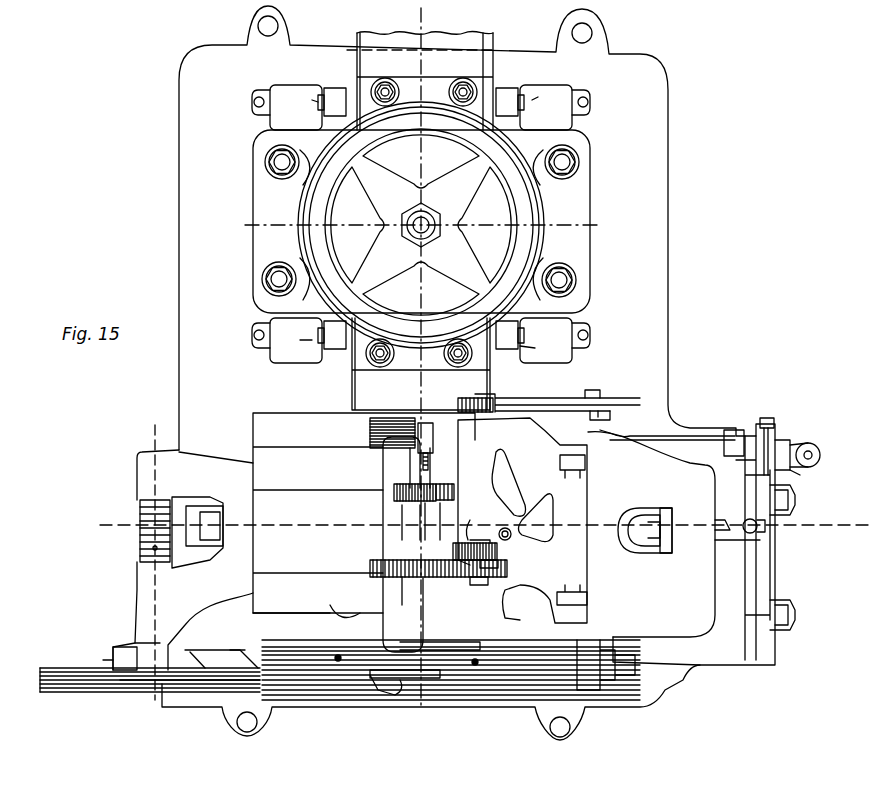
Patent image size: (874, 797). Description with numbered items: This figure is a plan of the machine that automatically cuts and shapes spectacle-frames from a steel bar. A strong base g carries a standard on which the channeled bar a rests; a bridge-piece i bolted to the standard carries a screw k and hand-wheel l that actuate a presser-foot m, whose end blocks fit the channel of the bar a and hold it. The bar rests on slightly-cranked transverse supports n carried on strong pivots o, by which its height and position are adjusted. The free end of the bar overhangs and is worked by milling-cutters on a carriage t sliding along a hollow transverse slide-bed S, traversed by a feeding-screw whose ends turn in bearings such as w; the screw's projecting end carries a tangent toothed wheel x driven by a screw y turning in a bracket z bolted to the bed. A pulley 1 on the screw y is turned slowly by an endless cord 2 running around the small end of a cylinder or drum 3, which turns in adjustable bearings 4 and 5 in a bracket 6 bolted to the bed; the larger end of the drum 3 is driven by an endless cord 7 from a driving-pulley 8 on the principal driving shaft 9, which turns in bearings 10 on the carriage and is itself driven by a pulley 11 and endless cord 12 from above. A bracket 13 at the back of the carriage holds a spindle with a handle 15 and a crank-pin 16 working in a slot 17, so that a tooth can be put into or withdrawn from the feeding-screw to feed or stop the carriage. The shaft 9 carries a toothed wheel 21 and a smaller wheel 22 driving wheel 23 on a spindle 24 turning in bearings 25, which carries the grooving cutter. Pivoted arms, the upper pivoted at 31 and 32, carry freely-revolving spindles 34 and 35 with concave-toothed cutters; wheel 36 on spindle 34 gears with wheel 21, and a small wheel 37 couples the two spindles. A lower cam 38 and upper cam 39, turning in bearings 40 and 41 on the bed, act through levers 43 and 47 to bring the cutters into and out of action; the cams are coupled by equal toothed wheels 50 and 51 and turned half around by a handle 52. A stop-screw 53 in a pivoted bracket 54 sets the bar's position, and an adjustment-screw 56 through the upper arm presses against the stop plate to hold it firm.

The base g is at (468, 373).
The hand-wheel l is at (421, 221).
The bridge-piece i is at (420, 221).
The screw k is at (413, 233).
The channeled bar a is at (422, 220).
The presser-foot m is at (421, 222).
The transverse supports n is at (505, 355).
The pivots o is at (418, 214).
The bracket z is at (183, 560).
The tangent toothed wheel x is at (140, 505).
The screw y is at (140, 543).
The slide-bed S is at (501, 538).
The carriage t is at (485, 535).
The bearing 40 is at (383, 434).
The bracket 54 is at (430, 436).
The stop-screw 53 is at (430, 456).
The driving shaft 9 is at (420, 468).
The bearings 25 is at (448, 478).
The toothed wheel 22 is at (394, 490).
The toothed wheel 23 is at (435, 505).
The spindle 35 is at (462, 398).
The adjustment-screw 56 is at (493, 529).
The spindle 24 is at (463, 551).
The small toothed wheel 37 is at (498, 564).
The toothed wheel 21 is at (370, 566).
The toothed wheel 36 is at (488, 582).
The bearings 10 is at (409, 563).
The pivot 32 is at (570, 475).
The pivot 31 is at (571, 588).
The spindle 34 is at (520, 403).
The lever 43 is at (598, 398).
The lever 47 is at (605, 400).
The lower cam 38 is at (636, 432).
The crank-pin 16 is at (645, 530).
The slot 17 is at (672, 522).
The bracket 13 is at (724, 552).
The bearing w is at (790, 525).
The handle 15 is at (758, 526).
The upper cam 39 is at (725, 430).
The toothed wheel 50 is at (768, 420).
The bearing 41 is at (778, 445).
The handle 52 is at (820, 455).
The toothed wheel 51 is at (800, 476).
The pulley 1 is at (96, 692).
The endless cord 2 is at (40, 678).
The cylinder or drum 3 is at (200, 650).
The adjustable bearing 4 is at (118, 648).
The bracket 6 is at (422, 667).
The pulley 11 is at (355, 665).
The endless cord 7 is at (385, 697).
The driving-pulley 8 is at (440, 690).
The endless cord 12 is at (446, 640).
The adjustable bearing 5 is at (606, 676).